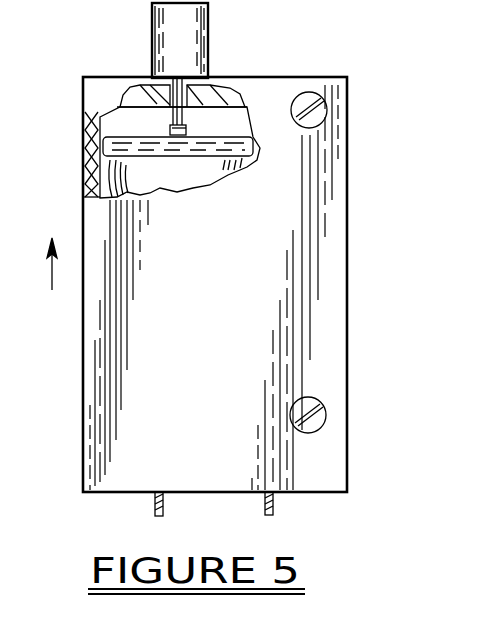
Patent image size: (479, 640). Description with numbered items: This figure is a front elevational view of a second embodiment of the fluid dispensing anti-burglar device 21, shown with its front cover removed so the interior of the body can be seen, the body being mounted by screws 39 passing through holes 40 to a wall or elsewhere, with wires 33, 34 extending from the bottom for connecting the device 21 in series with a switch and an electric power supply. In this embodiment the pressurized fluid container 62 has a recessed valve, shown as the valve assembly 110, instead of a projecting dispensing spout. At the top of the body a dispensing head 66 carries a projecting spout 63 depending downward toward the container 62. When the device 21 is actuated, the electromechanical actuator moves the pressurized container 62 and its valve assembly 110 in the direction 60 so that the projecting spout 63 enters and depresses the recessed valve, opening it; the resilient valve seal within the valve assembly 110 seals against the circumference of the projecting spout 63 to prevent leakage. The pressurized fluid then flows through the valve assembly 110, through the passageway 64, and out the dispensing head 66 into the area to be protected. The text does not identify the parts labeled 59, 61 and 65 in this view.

The fluid dispensing anti-burglar device 21 is at (347, 245).
The housing side wall 61 is at (328, 312).
The dispensing head 66 is at (190, 21).
The tube wall 59 is at (152, 20).
The wedge block 65 is at (120, 101).
The passageway 64 is at (172, 121).
The projecting spout 63 is at (186, 128).
The pressurized fluid container 62 is at (92, 197).
The valve assembly 110 is at (108, 147).
The direction 60 is at (49, 280).
The screws 39 is at (320, 111).
The holes 40 is at (323, 94).
The wire 33 is at (155, 508).
The wire 34 is at (273, 508).